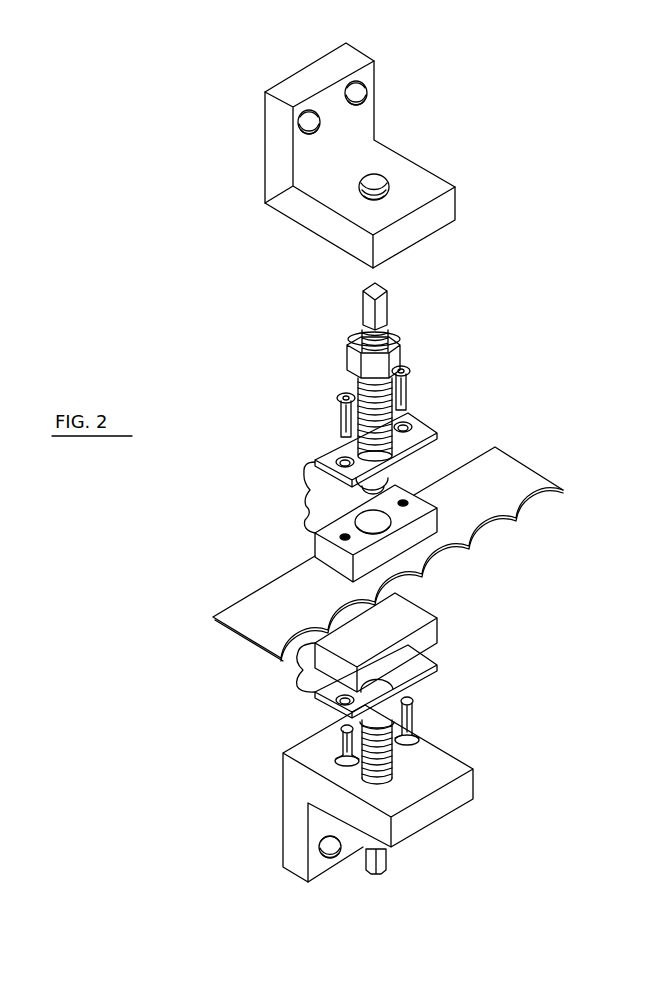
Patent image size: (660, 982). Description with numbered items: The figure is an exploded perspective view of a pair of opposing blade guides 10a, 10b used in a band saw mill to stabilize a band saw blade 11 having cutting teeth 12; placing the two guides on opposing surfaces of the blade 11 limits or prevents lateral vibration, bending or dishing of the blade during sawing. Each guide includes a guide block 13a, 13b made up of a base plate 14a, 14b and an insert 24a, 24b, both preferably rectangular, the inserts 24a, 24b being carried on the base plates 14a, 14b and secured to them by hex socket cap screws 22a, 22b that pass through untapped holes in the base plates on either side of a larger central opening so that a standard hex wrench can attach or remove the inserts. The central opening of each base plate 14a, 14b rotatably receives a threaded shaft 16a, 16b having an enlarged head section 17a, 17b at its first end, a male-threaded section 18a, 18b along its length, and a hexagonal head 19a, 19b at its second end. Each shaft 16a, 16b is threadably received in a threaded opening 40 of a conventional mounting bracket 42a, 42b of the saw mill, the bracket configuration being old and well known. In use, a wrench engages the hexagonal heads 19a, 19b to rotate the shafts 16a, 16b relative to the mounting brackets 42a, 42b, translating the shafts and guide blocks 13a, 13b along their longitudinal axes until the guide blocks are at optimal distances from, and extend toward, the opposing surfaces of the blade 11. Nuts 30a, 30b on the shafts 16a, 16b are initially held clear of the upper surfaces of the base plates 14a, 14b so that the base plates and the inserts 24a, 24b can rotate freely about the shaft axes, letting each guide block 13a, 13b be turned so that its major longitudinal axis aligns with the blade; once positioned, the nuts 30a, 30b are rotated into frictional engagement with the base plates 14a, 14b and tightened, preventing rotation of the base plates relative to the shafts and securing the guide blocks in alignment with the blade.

The blade guide 10a is at (333, 405).
The blade guide 10b is at (312, 741).
The band saw blade 11 is at (428, 546).
The cutting teeth 12 is at (513, 518).
The guide block 13a is at (302, 500).
The guide block 13b is at (293, 677).
The base plate 14a is at (338, 448).
The base plate 14b is at (335, 718).
The threaded shaft 16a is at (327, 361).
The threaded shaft 16b is at (344, 766).
The enlarged head section 17a is at (382, 487).
The enlarged head section 17b is at (423, 691).
The male-threaded section 18a is at (390, 334).
The male-threaded section 18b is at (394, 752).
The hexagonal head 19a is at (380, 294).
The hexagonal head 19b is at (364, 866).
The cap screws 22a is at (347, 392).
The cap screws 22b is at (356, 745).
The insert 24a is at (328, 552).
The insert 24b is at (393, 623).
The nut 30a is at (343, 352).
The nut 30b is at (416, 696).
The threaded opening 40 is at (382, 178).
The mounting bracket 42a is at (402, 155).
The mounting bracket 42b is at (427, 807).